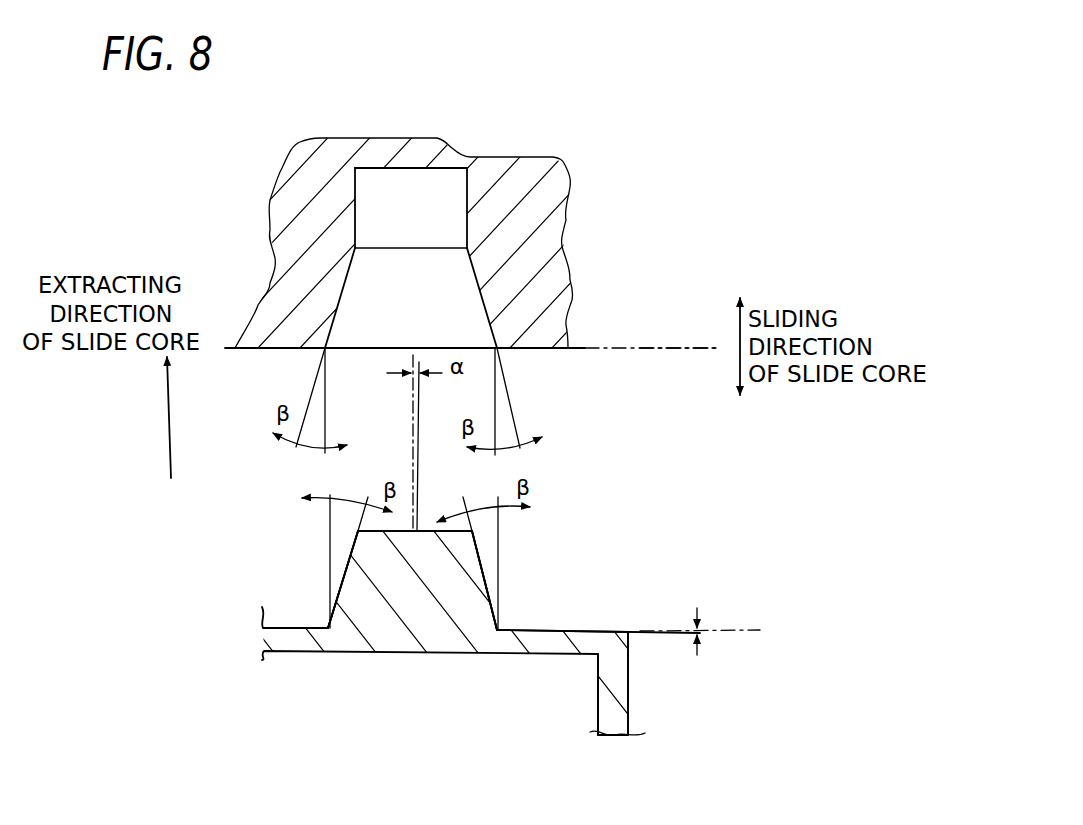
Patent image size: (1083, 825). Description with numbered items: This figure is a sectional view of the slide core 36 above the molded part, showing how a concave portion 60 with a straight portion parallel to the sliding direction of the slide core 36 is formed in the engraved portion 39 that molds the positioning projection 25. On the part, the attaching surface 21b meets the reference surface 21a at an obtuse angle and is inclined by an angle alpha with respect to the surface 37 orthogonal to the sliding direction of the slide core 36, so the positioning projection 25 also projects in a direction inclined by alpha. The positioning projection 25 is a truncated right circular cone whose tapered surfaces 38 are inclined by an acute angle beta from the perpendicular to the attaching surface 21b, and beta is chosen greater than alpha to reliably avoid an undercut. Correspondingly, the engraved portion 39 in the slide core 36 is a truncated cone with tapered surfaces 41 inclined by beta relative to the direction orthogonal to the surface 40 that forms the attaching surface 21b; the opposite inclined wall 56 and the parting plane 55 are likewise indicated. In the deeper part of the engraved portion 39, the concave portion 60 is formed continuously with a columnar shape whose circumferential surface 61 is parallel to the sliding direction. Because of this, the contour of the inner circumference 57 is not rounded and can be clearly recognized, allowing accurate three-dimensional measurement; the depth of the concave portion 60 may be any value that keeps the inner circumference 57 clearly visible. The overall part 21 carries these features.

The slide core 21 is at (262, 633).
The reference surface 21a is at (627, 683).
The attaching surface 21b is at (597, 632).
The positioning projection 25 is at (415, 607).
The slide core 36 is at (570, 197).
The surface orthogonal to the sliding direction of the slide core 37 is at (748, 628).
The tapered surface 38 is at (350, 557).
The engraved portion 39 is at (365, 350).
The surface for forming the attaching surface 40 is at (548, 352).
The tapered surface 41 is at (477, 290).
The parting plane 55 is at (679, 345).
The inclined inner surface of recess 56 is at (320, 350).
The inner circumference 57 is at (357, 250).
The concave portion 60 is at (450, 180).
The circumferential surface 61 is at (358, 207).